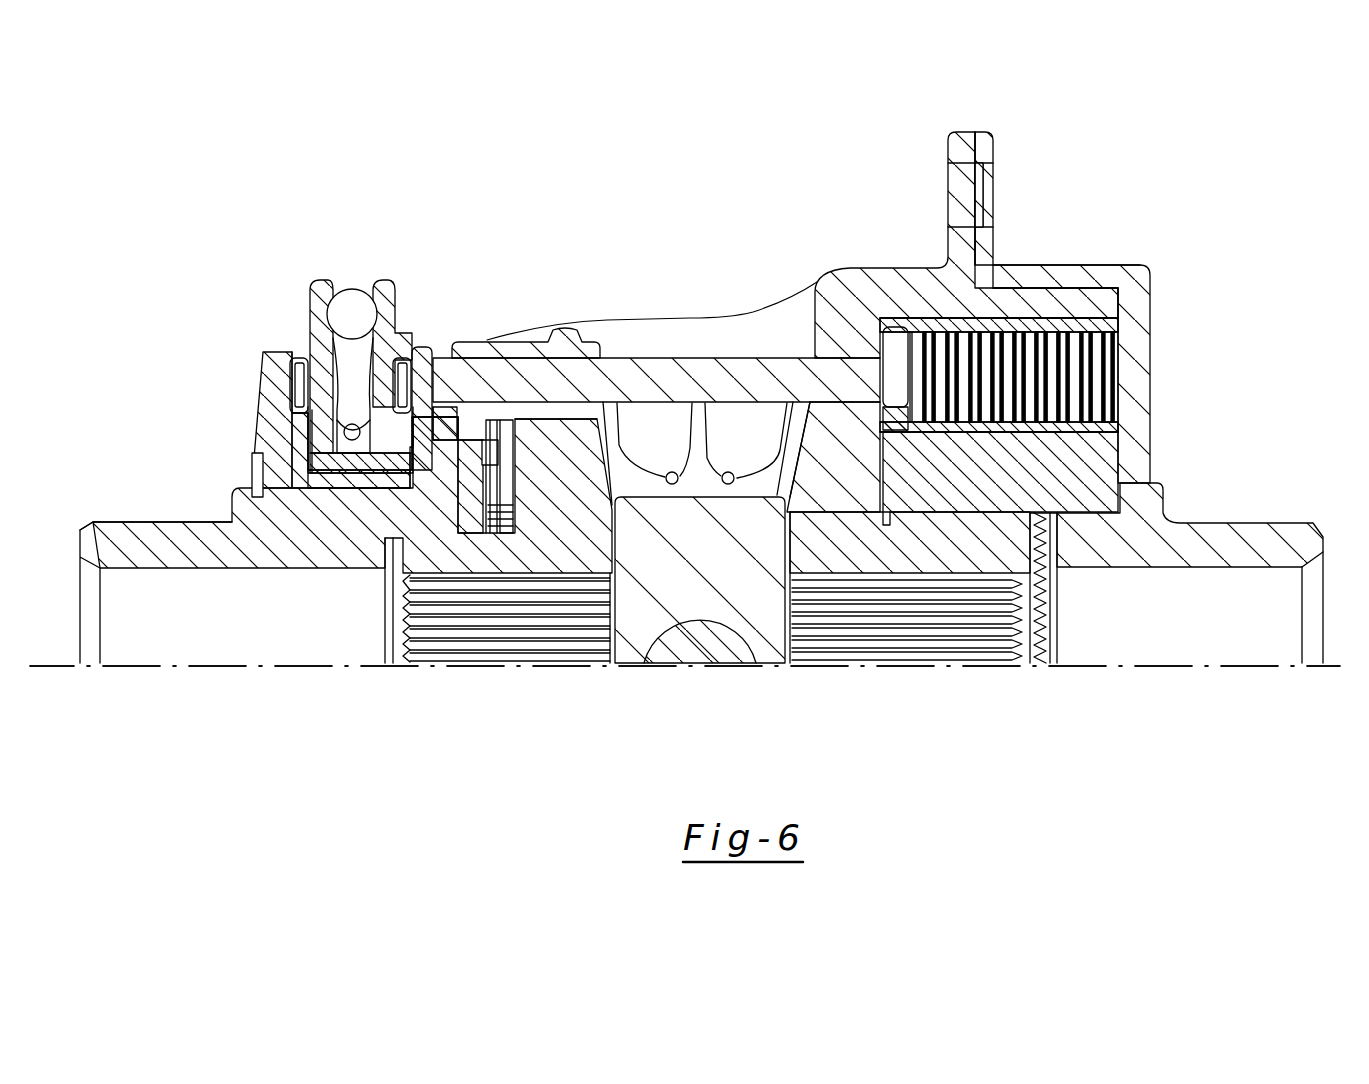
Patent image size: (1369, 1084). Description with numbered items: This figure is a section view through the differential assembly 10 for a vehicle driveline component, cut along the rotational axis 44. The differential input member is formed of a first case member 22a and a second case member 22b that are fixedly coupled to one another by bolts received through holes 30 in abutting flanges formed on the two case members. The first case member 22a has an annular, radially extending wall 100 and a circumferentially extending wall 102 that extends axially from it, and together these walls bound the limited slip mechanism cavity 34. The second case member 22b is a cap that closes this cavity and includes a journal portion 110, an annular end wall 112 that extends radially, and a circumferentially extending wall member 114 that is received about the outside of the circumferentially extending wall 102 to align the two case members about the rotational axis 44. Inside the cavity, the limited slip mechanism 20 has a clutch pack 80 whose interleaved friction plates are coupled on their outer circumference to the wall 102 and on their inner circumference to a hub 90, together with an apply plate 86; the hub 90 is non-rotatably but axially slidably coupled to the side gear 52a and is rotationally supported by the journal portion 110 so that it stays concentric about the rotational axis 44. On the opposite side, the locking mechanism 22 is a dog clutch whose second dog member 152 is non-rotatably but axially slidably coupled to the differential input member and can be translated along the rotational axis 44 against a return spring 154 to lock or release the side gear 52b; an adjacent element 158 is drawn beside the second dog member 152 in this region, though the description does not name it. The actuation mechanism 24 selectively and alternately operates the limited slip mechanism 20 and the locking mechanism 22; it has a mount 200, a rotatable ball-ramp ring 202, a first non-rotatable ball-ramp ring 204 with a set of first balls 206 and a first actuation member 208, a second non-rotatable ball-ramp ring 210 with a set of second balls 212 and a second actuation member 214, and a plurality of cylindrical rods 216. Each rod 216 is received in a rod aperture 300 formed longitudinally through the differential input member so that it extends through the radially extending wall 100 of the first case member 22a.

The differential assembly 10 is at (1005, 683).
The limited slip mechanism 20 is at (1087, 400).
The locking mechanism 22 is at (440, 510).
The first case member 22a is at (212, 560).
The second case member 22b is at (1207, 562).
The actuation mechanism 24 is at (255, 278).
The holes 30 is at (975, 180).
The limited slip mechanism cavity 34 is at (878, 418).
The rotational axis 44 is at (178, 672).
The side gear 52a is at (830, 520).
The side gear 52b is at (565, 548).
The clutch pack 80 is at (1067, 356).
The apply plate 86 is at (893, 345).
The hub 90 is at (1100, 488).
The radially extending wall 100 is at (830, 345).
The circumferentially extending wall 102 is at (1095, 305).
The journal portion 110 is at (1090, 535).
The end wall 112 is at (1140, 420).
The circumferentially extending wall member 114 is at (1040, 283).
The second dog member 152 is at (472, 505).
The return spring 154 is at (508, 538).
The piston 158 is at (512, 483).
The mount 200 is at (272, 407).
The rotatable ball-ramp ring 202 is at (318, 285).
The first non-rotatable ball-ramp ring 204 is at (300, 460).
The first balls 206 is at (344, 430).
The first actuation member 208 is at (395, 440).
The second non-rotatable ball-ramp ring 210 is at (383, 285).
The second balls 212 is at (352, 300).
The second actuation member 214 is at (425, 350).
The rods 216 is at (637, 375).
The rod apertures 300 is at (490, 345).